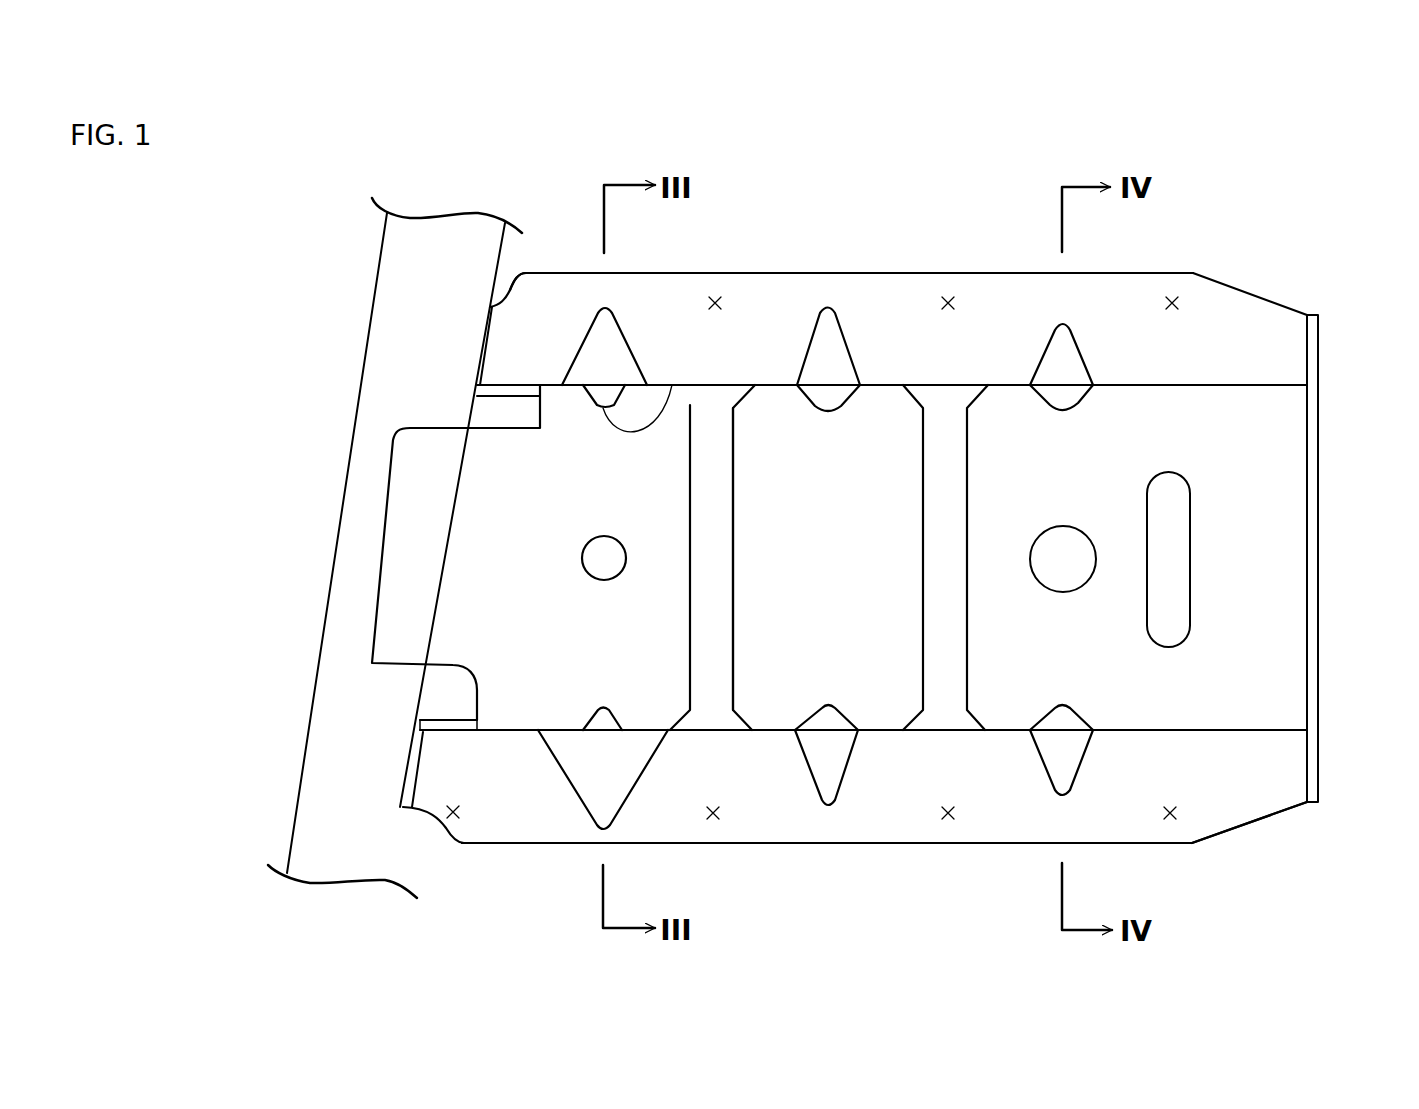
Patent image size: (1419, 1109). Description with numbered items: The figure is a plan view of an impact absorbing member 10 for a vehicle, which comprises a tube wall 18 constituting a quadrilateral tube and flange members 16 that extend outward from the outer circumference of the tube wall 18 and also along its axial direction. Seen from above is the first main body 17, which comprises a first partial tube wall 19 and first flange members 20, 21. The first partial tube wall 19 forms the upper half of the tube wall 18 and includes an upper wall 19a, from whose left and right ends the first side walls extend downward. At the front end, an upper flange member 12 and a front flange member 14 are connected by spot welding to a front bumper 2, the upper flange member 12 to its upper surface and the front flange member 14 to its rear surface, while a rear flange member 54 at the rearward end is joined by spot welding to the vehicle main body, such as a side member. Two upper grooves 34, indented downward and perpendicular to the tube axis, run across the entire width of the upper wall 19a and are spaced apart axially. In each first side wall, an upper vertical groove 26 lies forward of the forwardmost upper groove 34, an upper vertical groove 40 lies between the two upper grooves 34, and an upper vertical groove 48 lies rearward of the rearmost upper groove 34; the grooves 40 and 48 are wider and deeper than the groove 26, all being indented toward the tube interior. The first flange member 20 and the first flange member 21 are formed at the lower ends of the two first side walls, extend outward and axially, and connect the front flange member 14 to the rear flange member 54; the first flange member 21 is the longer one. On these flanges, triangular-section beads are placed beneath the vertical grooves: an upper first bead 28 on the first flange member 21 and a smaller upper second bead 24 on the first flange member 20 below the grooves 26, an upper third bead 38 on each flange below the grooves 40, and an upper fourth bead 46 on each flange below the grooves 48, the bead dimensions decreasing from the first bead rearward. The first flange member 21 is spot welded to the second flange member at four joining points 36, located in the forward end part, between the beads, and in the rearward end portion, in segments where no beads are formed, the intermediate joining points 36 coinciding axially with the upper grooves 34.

The front bumper 2 is at (367, 462).
The impact absorbing member 10 is at (527, 198).
The upper flange member 12 is at (415, 530).
The front flange member 14 is at (486, 338).
The flange members 16 is at (558, 270).
The first main body 17 is at (516, 276).
The tube wall 18 is at (652, 380).
The first partial tube wall 19 is at (515, 607).
The upper wall 19a is at (508, 672).
The first flange member 20 is at (753, 298).
The first flange member 21 is at (1252, 805).
The upper second bead 24 is at (600, 318).
The upper vertical groove 26 is at (692, 413).
The upper first bead 28 is at (595, 810).
The upper grooves 34 is at (740, 458).
The joining points 36 is at (716, 297).
The upper third bead 38 is at (827, 316).
The upper vertical groove 40 is at (852, 398).
The upper fourth bead 46 is at (1040, 352).
The upper vertical groove 48 is at (1083, 403).
The rear flange member 54 is at (1318, 423).